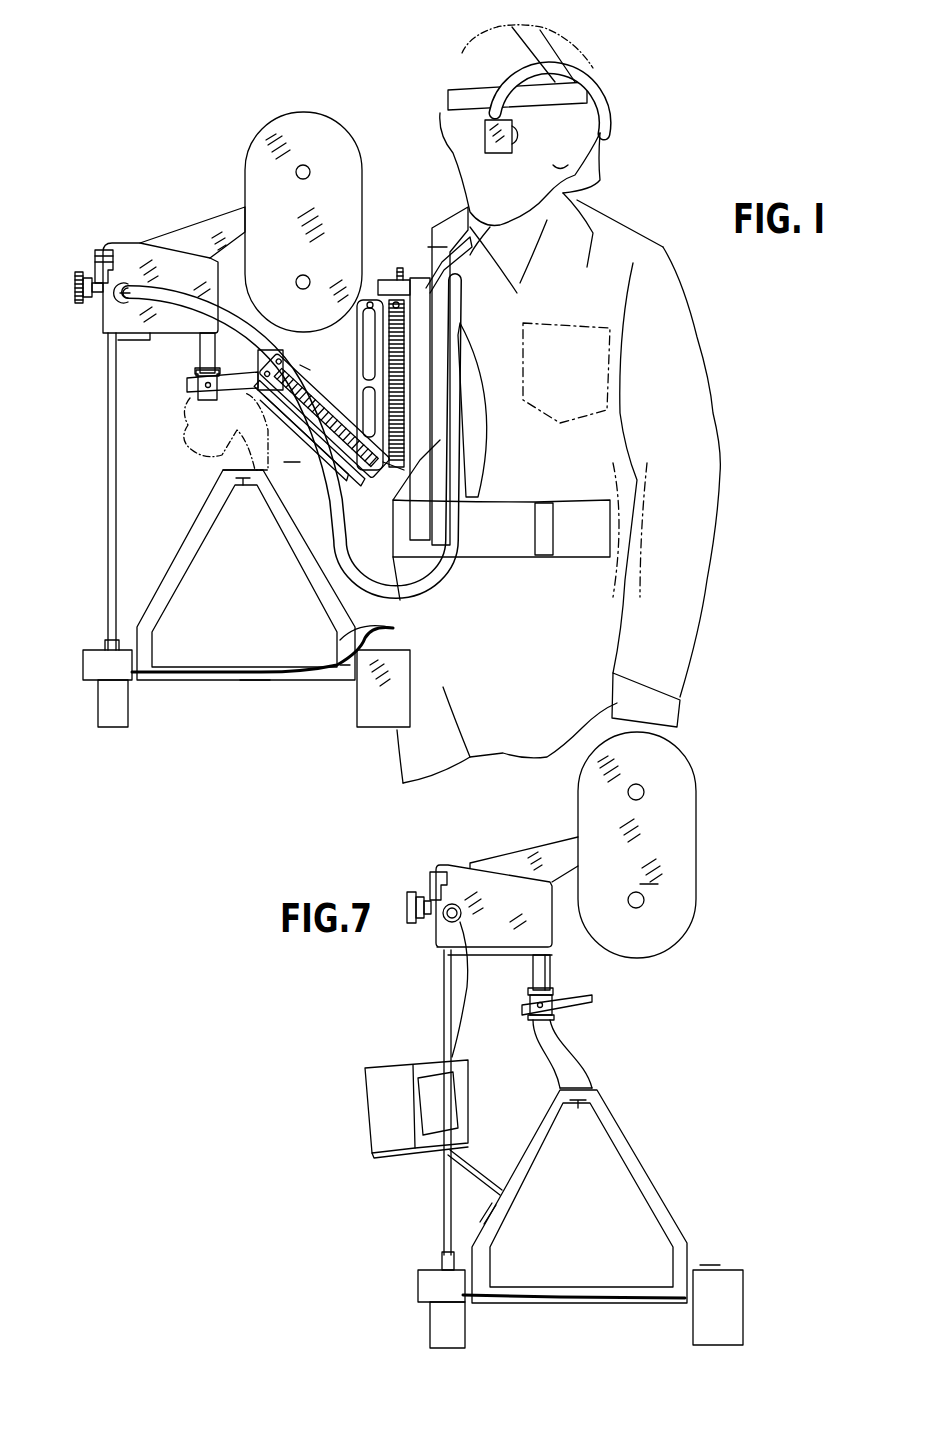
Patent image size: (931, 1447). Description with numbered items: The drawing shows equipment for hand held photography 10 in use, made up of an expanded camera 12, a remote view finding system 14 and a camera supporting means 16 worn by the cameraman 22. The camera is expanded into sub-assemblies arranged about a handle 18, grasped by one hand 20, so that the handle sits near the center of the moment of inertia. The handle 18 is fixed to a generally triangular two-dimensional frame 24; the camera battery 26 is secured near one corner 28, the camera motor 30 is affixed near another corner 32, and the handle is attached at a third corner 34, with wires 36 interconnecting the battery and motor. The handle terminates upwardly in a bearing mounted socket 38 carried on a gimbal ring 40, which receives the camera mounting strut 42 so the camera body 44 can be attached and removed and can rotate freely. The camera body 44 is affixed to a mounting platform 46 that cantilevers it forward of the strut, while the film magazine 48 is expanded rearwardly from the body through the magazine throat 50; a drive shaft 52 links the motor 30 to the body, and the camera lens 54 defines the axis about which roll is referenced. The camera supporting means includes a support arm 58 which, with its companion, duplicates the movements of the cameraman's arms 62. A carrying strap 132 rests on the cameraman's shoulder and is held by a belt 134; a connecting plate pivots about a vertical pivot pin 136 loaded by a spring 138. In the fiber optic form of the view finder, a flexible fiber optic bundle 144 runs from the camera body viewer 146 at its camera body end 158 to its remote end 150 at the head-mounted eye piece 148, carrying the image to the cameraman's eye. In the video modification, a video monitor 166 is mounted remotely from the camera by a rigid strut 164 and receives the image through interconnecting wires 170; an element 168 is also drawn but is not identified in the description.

In FIG. 1, the equipment for hand held photography 10 is at (301, 362).
In FIG. 1, the expanded camera 12 is at (98, 340).
In FIG. 1, the remote view finding system 14 is at (169, 296).
In FIG. 7, the remote view finding system 14 is at (360, 1108).
In FIG. 1, the camera supporting means 16 is at (380, 272).
In FIG. 7, the handle 18 is at (574, 1059).
In FIG. 1, the hand 20 is at (200, 449).
In FIG. 1, the cameraman 22 is at (640, 230).
In FIG. 1, the frame 24 is at (188, 547).
In FIG. 7, the frame 24 is at (645, 1170).
In FIG. 1, the camera battery 26 is at (400, 677).
In FIG. 7, the camera battery 26 is at (736, 1318).
In FIG. 1, the corner 28 is at (345, 669).
In FIG. 1, the camera motor 30 is at (100, 708).
In FIG. 7, the camera motor 30 is at (428, 1320).
In FIG. 1, the corner 32 is at (170, 662).
In FIG. 7, the corner 32 is at (490, 1286).
In FIG. 1, the third corner 34 is at (243, 486).
In FIG. 7, the third corner 34 is at (578, 1109).
In FIG. 1, the wires 36 is at (255, 683).
In FIG. 7, the wires 36 is at (707, 1264).
In FIG. 1, the bearing mounted socket 38 is at (198, 379).
In FIG. 7, the bearing mounted socket 38 is at (554, 1012).
In FIG. 1, the gimbal ring 40 is at (188, 391).
In FIG. 1, the camera mounting strut 42 is at (200, 351).
In FIG. 7, the camera mounting strut 42 is at (546, 972).
In FIG. 1, the camera body 44 is at (112, 250).
In FIG. 7, the camera body 44 is at (447, 871).
In FIG. 1, the mounting platform 46 is at (150, 341).
In FIG. 1, the film magazine 48 is at (343, 134).
In FIG. 7, the film magazine 48 is at (686, 810).
In FIG. 1, the magazine throat 50 is at (222, 226).
In FIG. 7, the magazine throat 50 is at (538, 853).
In FIG. 1, the drive shaft 52 is at (108, 452).
In FIG. 7, the drive shaft 52 is at (443, 1234).
In FIG. 1, the camera lens 54 is at (76, 280).
In FIG. 7, the camera lens 54 is at (407, 903).
In FIG. 1, the support arm 58 is at (352, 366).
In FIG. 1, the cameraman's arms 62 is at (292, 463).
In FIG. 1, the carrying strap 132 is at (445, 248).
In FIG. 1, the belt 134 is at (598, 541).
In FIG. 1, the vertical pivot pin 136 is at (448, 228).
In FIG. 1, the spring 138 is at (400, 268).
In FIG. 1, the fiber optic bundle 144 is at (455, 336).
In FIG. 1, the camera body viewer 146 is at (126, 298).
In FIG. 1, the eye piece 148 is at (518, 134).
In FIG. 1, the end of fiber optic bundle 150 is at (507, 76).
In FIG. 1, the camera body end of fiber optic bundle 158 is at (121, 283).
In FIG. 7, the rigid strut 164 is at (488, 1173).
In FIG. 7, the video monitor 166 is at (400, 1063).
In FIG. 7, the socket 168 is at (460, 919).
In FIG. 7, the interconnecting wires 170 is at (466, 1001).